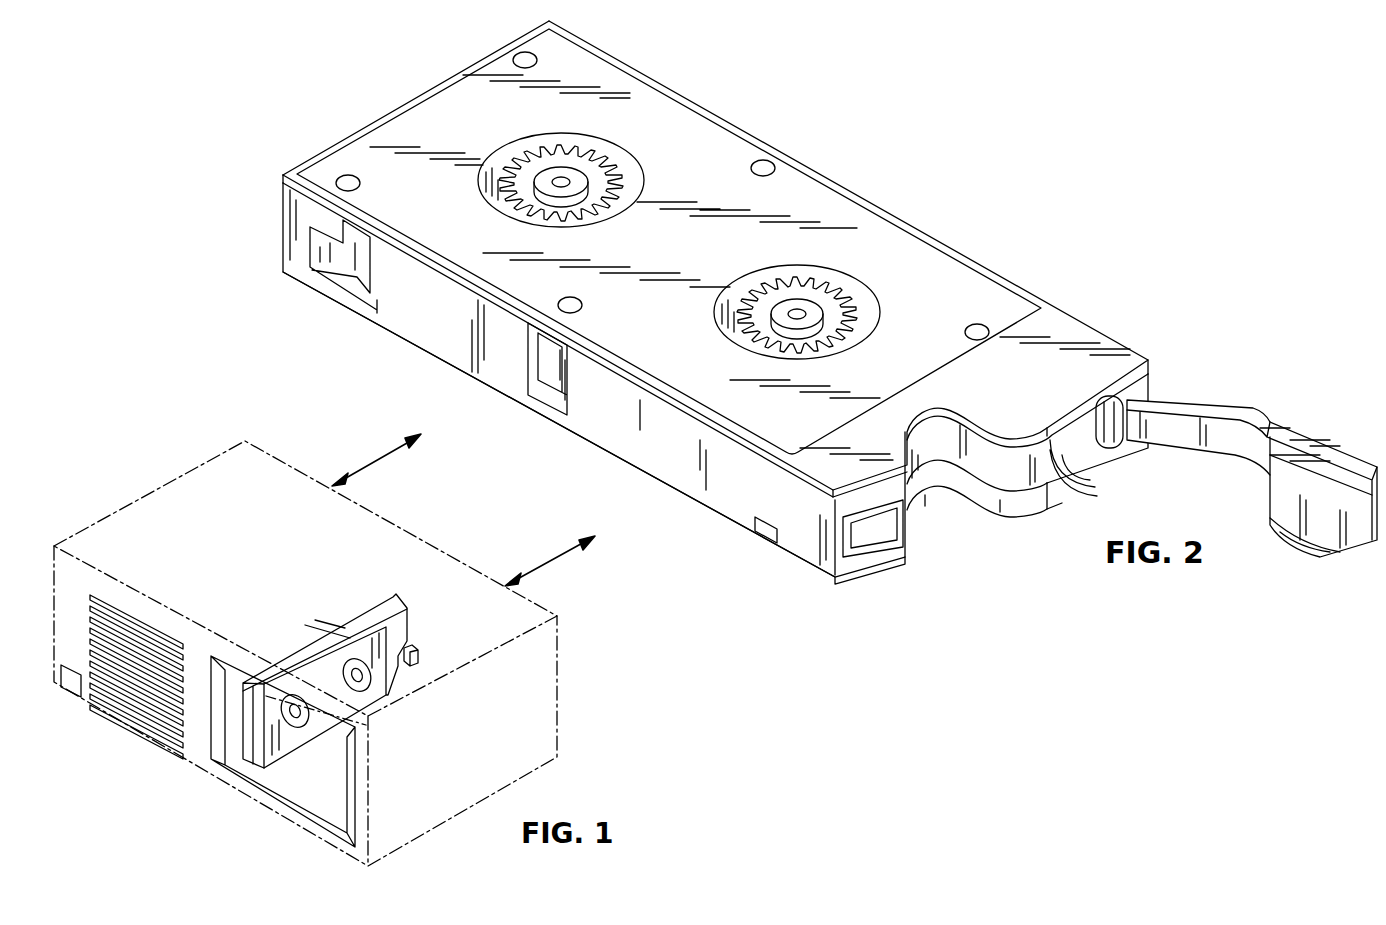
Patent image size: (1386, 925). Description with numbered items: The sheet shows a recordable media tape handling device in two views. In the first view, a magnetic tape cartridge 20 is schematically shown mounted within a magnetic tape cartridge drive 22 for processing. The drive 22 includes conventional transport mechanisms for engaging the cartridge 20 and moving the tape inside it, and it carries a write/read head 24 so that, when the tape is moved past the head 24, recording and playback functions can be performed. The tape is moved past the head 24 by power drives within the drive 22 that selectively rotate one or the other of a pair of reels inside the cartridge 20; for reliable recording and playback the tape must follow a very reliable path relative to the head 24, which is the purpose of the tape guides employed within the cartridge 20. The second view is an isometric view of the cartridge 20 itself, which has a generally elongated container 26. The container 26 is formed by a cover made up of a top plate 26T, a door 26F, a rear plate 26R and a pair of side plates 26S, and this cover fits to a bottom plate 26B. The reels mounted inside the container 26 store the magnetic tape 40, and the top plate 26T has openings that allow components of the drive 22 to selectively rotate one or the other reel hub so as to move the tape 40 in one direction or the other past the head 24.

In FIG. 2, the magnetic tape cartridge 20 is at (1016, 251).
In FIG. 1, the magnetic tape cartridge 20 is at (354, 620).
In FIG. 1, the magnetic tape cartridge drive 22 is at (208, 461).
In FIG. 1, the write/read head 24 is at (420, 657).
In FIG. 2, the container 26 is at (818, 160).
In FIG. 2, the top plate 26T is at (684, 122).
In FIG. 2, the bottom plate 26B is at (701, 503).
In FIG. 2, the side plates 26S is at (897, 216).
In FIG. 2, the rear plate 26R is at (412, 98).
In FIG. 2, the door 26F is at (1307, 426).
In FIG. 2, the magnetic tape 40 is at (941, 476).